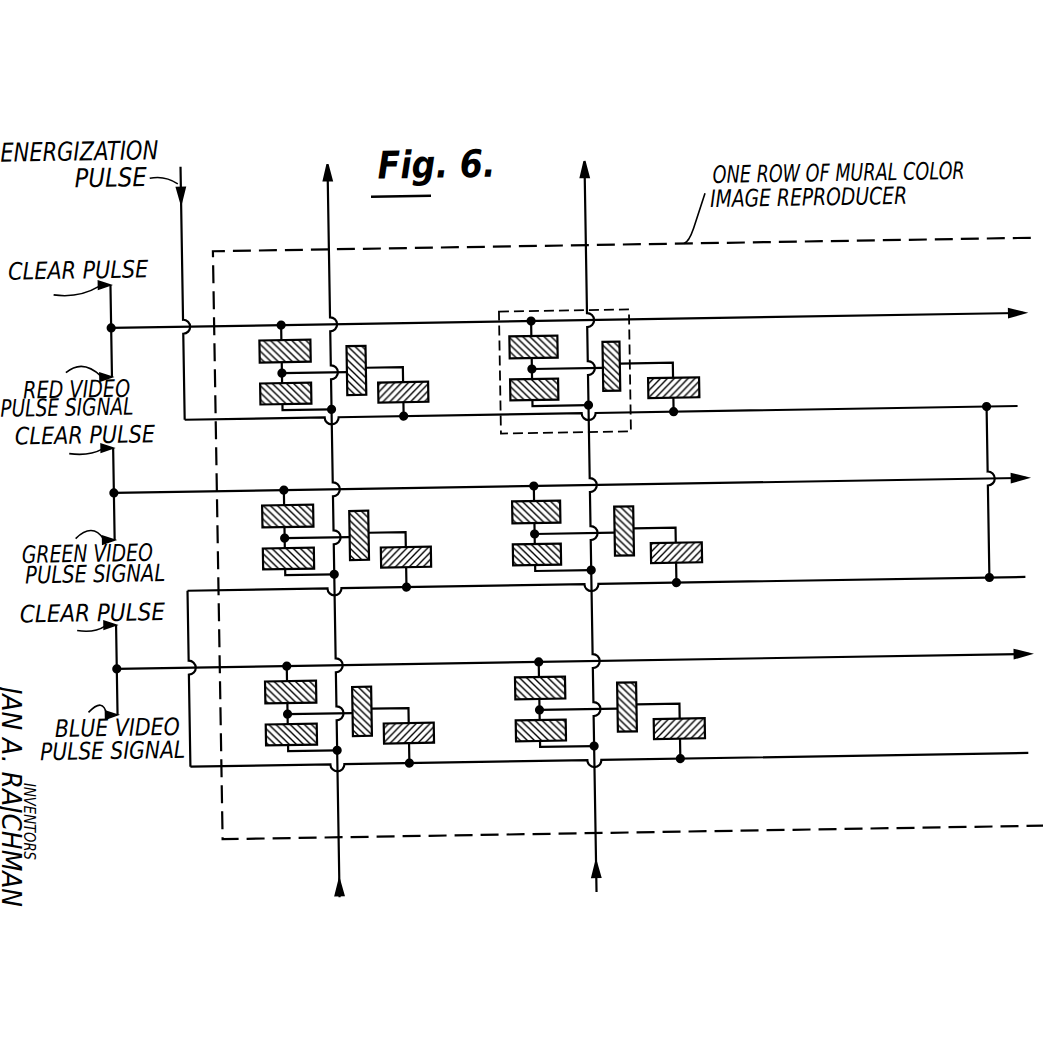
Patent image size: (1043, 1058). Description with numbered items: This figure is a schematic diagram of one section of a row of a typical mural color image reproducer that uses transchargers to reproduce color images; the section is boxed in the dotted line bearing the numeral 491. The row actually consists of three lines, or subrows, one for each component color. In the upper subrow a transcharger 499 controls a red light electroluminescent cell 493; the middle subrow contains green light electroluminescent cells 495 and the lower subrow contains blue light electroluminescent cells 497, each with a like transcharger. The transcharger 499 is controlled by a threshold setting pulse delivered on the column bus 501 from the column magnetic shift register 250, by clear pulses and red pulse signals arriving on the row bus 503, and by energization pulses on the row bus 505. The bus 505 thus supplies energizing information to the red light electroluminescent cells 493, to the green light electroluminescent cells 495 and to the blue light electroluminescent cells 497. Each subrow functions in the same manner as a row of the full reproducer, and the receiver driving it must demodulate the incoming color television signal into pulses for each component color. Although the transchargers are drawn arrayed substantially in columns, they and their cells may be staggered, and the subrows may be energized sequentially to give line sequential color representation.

The dotted line section box 491 is at (416, 253).
The red light electroluminescent cell 493 is at (420, 387).
The green light electroluminescent cell 495 is at (413, 555).
The blue light electroluminescent cell 497 is at (428, 732).
The transcharger 499 is at (615, 318).
The bus 501 is at (592, 234).
The bus 503 is at (418, 328).
The bus 505 is at (701, 421).
The column magnetic shift register 250 is at (429, 529).